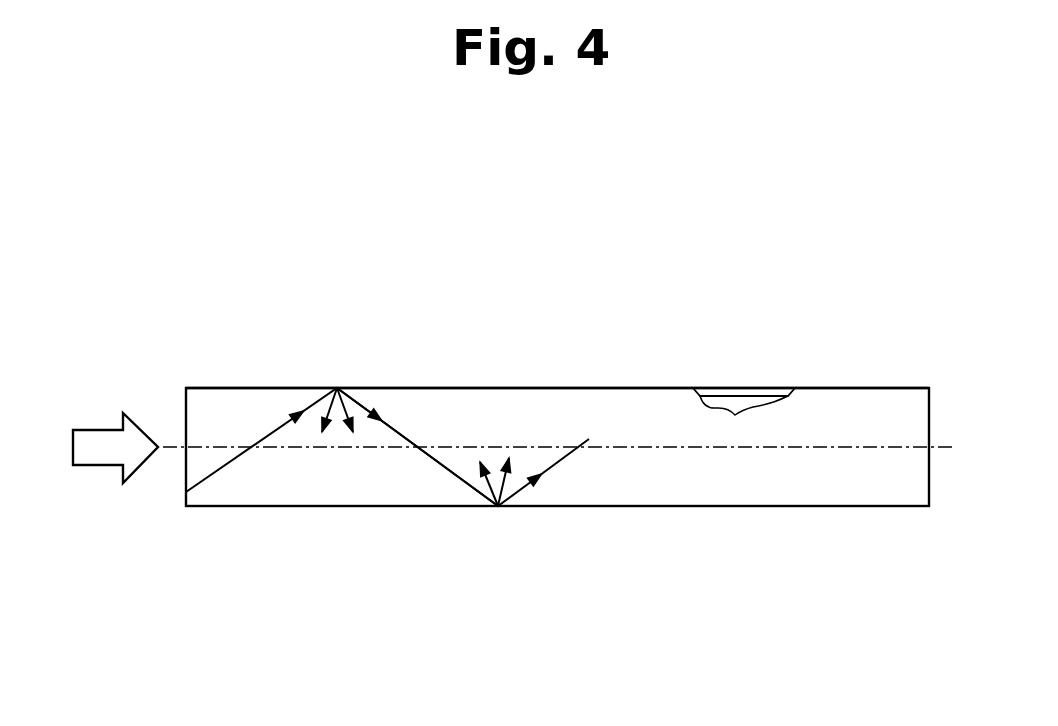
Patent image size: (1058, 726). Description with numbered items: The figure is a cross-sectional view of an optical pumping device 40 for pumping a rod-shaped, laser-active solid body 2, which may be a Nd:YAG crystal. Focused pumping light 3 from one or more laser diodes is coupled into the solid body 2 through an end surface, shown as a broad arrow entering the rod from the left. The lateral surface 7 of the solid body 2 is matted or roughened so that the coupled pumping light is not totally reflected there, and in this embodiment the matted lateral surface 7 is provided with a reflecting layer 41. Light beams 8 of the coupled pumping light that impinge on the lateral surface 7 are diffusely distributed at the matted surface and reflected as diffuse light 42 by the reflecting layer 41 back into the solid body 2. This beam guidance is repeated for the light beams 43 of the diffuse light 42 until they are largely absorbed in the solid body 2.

The optical pumping device 40 is at (557, 323).
The reflecting layer 41 is at (772, 387).
The laser-active solid body 2 is at (746, 396).
The lateral surface 7 is at (718, 398).
The pumping light 3 is at (98, 447).
The light beams 8 is at (223, 477).
The diffuse light 42 is at (346, 442).
The light beams of the diffuse light 43 is at (390, 427).